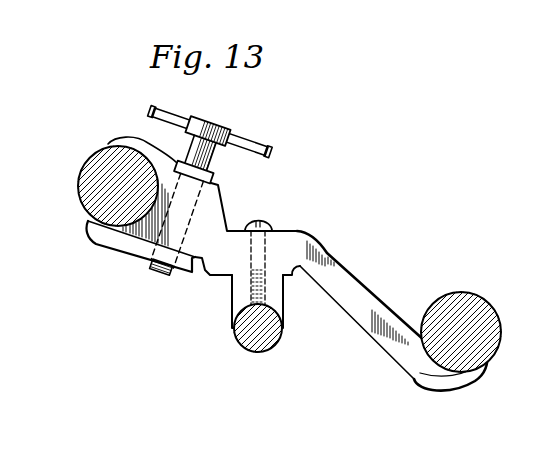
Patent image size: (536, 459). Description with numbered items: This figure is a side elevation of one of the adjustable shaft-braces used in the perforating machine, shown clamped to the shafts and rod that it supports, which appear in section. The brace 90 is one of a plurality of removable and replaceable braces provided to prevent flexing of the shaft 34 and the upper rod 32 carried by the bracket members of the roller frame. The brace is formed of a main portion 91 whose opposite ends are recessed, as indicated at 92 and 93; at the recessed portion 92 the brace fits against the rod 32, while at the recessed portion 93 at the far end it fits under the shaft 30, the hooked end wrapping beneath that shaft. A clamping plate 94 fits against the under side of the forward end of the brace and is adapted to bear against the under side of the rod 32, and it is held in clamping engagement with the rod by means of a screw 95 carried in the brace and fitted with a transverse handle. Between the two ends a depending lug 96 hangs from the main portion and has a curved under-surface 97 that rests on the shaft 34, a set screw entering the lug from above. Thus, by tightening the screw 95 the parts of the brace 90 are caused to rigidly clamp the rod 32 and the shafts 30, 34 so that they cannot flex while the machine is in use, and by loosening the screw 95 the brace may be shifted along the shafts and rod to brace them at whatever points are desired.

The shaft 30 is at (482, 281).
The upper rod 32 is at (86, 190).
The shaft 34 is at (260, 352).
The brace 90 is at (237, 227).
The main portion 91 is at (353, 280).
The recessed portion 92 is at (149, 143).
The recessed portion 93 is at (425, 373).
The clamping plate 94 is at (122, 242).
The screw 95 is at (214, 165).
The depending lug 96 is at (273, 303).
The curved under-surface 97 is at (235, 310).